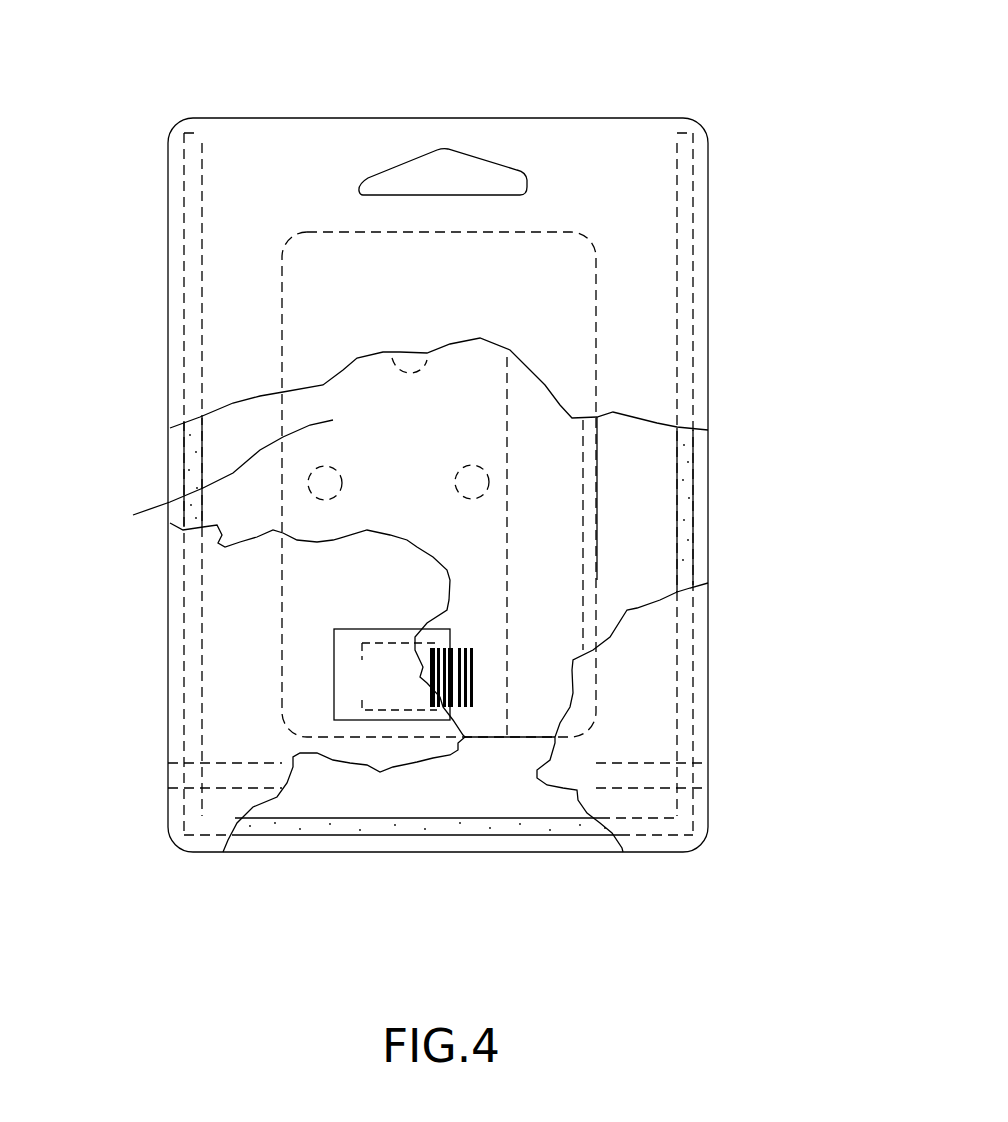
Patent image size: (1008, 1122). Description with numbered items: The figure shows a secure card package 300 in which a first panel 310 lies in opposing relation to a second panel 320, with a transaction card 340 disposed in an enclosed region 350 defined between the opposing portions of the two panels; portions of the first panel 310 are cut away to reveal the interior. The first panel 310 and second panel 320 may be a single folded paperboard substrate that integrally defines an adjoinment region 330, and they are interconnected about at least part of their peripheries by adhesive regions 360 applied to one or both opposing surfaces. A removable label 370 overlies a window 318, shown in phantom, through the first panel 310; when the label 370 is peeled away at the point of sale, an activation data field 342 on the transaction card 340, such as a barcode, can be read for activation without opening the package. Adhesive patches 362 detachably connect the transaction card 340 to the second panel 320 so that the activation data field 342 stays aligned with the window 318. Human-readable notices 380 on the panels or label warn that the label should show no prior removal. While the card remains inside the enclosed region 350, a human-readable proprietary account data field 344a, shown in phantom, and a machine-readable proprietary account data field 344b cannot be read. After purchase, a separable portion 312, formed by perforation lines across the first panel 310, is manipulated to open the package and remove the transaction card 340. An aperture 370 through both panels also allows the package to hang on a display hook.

The secure card package 300 is at (618, 105).
The first panel 310 is at (217, 323).
The separable portion 312 is at (232, 762).
The window 318 is at (360, 698).
The second panel 320 is at (168, 438).
The adjoinment region 330 is at (322, 132).
The transaction card 340 is at (438, 595).
The activation data field 342 is at (470, 668).
The human-readable proprietary account data field 344a is at (141, 476).
The machine-readable proprietary account data field 344b is at (590, 440).
The enclosed region 350 is at (633, 510).
The adhesive regions 360 is at (185, 213).
The adhesive patches 362 is at (293, 509).
The removable label 370 is at (440, 165).
The human-readable notices 380 is at (652, 353).